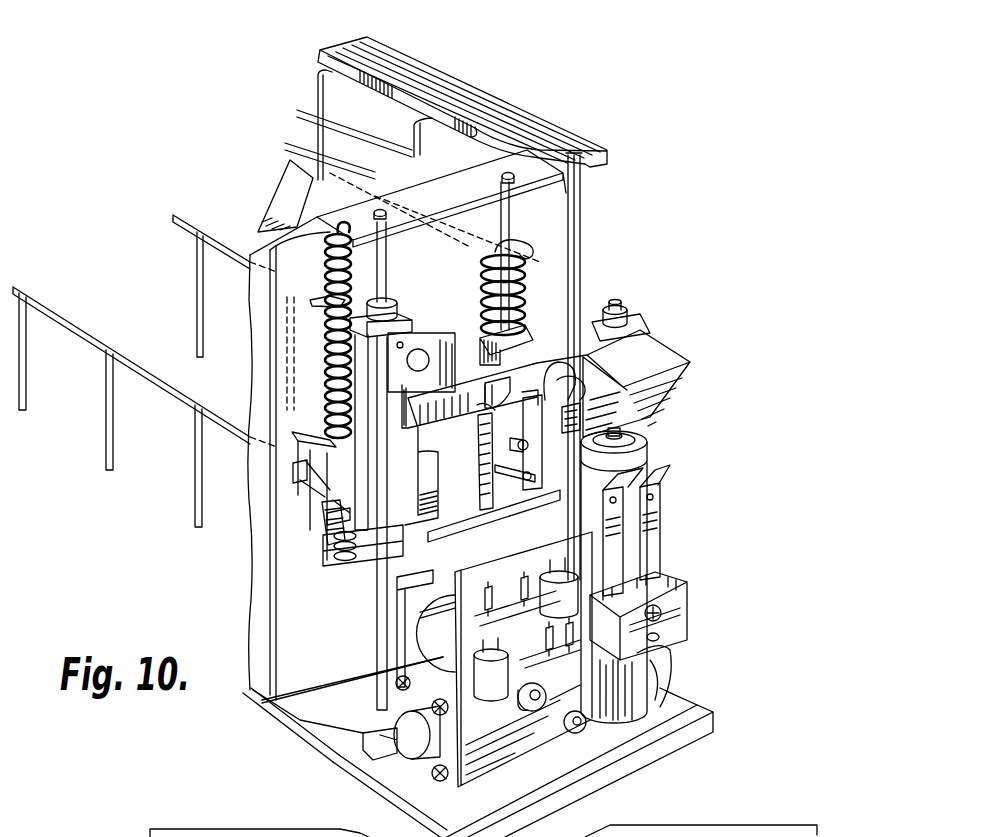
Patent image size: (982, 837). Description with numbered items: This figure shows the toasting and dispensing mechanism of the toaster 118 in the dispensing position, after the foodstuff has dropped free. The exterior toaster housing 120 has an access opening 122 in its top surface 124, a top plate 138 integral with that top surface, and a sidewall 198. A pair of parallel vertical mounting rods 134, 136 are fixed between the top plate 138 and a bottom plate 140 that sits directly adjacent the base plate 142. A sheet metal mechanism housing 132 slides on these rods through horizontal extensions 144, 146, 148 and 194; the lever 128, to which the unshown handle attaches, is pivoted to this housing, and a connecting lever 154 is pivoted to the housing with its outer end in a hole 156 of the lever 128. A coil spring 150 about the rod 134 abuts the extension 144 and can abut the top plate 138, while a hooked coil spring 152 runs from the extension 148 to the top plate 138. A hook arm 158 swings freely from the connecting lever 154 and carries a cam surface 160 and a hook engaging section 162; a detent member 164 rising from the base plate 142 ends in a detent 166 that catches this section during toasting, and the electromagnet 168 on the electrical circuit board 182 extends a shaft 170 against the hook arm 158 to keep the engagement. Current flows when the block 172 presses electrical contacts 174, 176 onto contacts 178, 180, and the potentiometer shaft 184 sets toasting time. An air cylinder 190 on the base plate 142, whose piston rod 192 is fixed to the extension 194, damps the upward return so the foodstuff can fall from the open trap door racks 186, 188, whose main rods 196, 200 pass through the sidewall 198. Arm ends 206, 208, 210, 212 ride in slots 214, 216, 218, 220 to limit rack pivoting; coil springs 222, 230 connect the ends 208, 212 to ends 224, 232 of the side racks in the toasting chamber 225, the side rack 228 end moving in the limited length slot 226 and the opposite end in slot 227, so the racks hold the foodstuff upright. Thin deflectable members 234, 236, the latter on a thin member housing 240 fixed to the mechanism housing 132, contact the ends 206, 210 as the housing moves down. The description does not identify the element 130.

The toaster 118 is at (610, 88).
The exterior toaster housing 120 is at (240, 609).
The access opening 122 is at (347, 85).
The top surface 124 is at (500, 105).
The lever 128 is at (358, 358).
The mounting bracket 130 is at (653, 345).
The mechanism housing 132 is at (630, 438).
The mounting rod 134 is at (510, 224).
The mounting rod 136 is at (393, 290).
The top plate 138 is at (572, 186).
The bottom plate 140 is at (323, 708).
The base plate 142 is at (663, 711).
The horizontal extension 144 is at (540, 305).
The horizontal extension 146 is at (405, 310).
The horizontal extension 148 is at (377, 631).
The coil spring 150 is at (530, 268).
The coil spring 152 is at (293, 369).
The connecting lever 154 is at (475, 343).
The hole 156 is at (480, 444).
The hook arm 158 is at (363, 408).
The cam surface 160 is at (440, 532).
The hook engaging section 162 is at (422, 470).
The detent member 164 is at (405, 638).
The detent 166 is at (412, 575).
The electromagnet 168 is at (330, 751).
The shaft 170 is at (393, 663).
The block 172 is at (673, 378).
The electrical contact 174 is at (650, 475).
The electrical contact 176 is at (663, 486).
The contact 178 is at (657, 515).
The contact 180 is at (660, 536).
The electrical circuit board 182 is at (527, 748).
The shaft 184 is at (345, 773).
The trap door rack 186 is at (158, 218).
The trap door rack 188 is at (178, 418).
The air cylinder 190 is at (650, 456).
The piston rod 192 is at (632, 313).
The horizontal extension 194 is at (640, 328).
The main rod 196 is at (217, 245).
The sidewall 198 is at (287, 626).
The main rod 200 is at (100, 341).
The end 206 is at (518, 483).
The end 208 is at (513, 508).
The end 210 is at (320, 458).
The end 212 is at (340, 566).
The limited distance slot 214 is at (660, 405).
The slot 216 is at (487, 481).
The slot 218 is at (310, 453).
The slot 220 is at (397, 581).
The coil spring 222 is at (493, 258).
The end 224 is at (490, 238).
The toasting chamber 225 is at (252, 148).
The limited length slot 226 is at (525, 238).
The slot 227 is at (330, 288).
The side rack 228 is at (300, 75).
The coil spring 230 is at (333, 498).
The end 232 is at (247, 308).
The thin deflectable member 234 is at (615, 301).
The thin deflectable member 236 is at (293, 438).
The thin member housing 240 is at (330, 483).